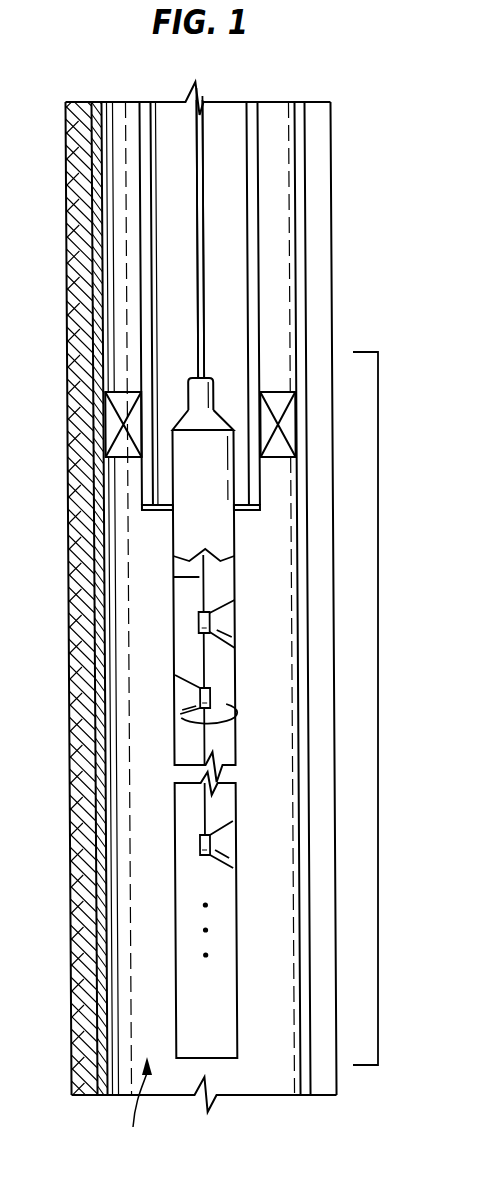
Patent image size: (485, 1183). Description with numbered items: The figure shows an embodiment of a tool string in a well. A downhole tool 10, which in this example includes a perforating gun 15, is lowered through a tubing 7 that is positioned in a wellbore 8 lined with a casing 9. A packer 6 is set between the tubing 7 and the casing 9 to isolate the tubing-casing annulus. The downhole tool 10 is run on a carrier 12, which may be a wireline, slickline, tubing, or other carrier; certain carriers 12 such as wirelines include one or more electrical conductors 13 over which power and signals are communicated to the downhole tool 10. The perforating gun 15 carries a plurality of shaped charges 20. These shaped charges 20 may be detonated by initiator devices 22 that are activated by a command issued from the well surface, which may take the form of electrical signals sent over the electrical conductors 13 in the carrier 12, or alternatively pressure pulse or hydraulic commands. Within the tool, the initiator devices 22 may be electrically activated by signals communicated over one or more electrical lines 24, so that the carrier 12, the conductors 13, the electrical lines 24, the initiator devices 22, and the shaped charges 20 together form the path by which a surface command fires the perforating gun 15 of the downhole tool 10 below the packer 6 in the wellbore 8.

The packer 6 is at (112, 422).
The tubing 7 is at (259, 278).
The wellbore 8 is at (139, 1105).
The casing 9 is at (96, 502).
The downhole tool 10 is at (378, 708).
The carrier 12 is at (198, 212).
The electrical conductors 13 is at (205, 245).
The perforating gun 15 is at (175, 988).
The shaped charges 20 is at (224, 638).
The initiator devices 22 is at (197, 622).
The electrical lines 24 is at (180, 578).